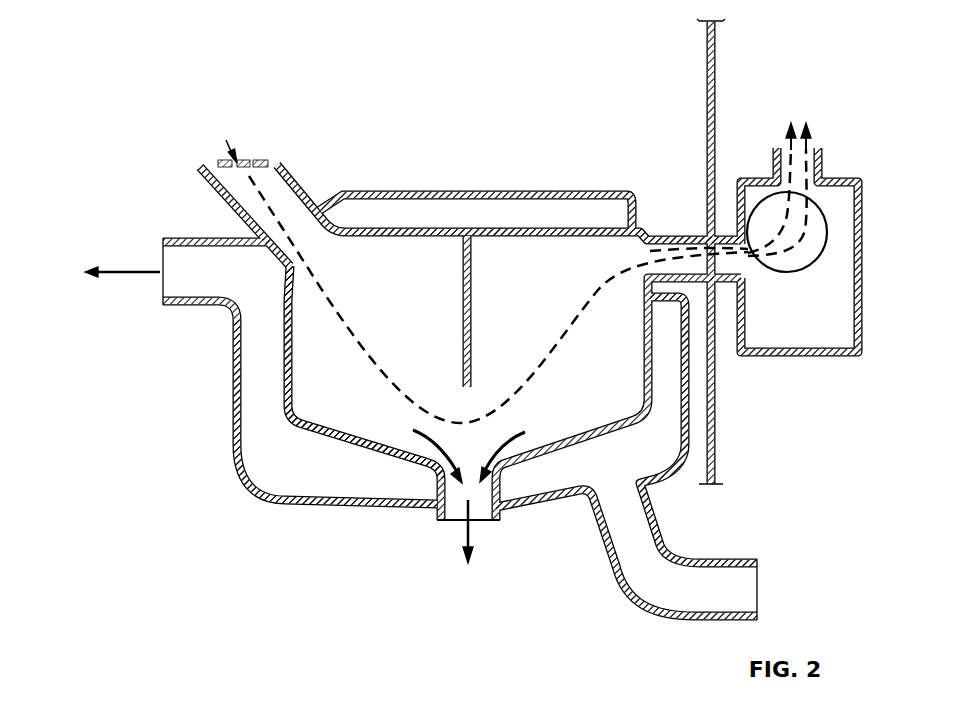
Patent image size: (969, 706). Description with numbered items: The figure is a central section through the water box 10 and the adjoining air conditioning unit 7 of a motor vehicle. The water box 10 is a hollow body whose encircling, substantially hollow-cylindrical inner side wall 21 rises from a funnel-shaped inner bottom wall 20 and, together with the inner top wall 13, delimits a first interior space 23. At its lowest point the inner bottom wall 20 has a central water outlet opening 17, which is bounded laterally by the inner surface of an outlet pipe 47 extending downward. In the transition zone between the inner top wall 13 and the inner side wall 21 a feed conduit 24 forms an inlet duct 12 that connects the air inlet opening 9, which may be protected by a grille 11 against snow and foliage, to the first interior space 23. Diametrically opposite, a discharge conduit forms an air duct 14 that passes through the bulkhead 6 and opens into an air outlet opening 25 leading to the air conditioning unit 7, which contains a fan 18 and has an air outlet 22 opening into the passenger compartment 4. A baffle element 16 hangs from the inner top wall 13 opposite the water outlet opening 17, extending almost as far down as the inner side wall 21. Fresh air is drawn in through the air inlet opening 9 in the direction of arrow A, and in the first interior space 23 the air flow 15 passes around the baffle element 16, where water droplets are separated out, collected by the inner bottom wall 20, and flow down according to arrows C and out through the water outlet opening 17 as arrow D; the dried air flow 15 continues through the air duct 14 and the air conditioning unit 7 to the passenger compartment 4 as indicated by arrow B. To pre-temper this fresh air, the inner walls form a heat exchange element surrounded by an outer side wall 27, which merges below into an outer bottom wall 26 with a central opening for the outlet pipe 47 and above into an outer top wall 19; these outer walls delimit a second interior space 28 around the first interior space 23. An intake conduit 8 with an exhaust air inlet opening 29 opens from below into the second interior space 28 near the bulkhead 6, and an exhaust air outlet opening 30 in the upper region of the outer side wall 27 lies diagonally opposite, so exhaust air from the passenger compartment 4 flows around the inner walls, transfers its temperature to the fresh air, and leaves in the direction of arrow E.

The passenger compartment 4 is at (786, 109).
The bulkhead 6 is at (720, 462).
The air conditioning unit 7 is at (794, 367).
The intake conduit 8 is at (618, 582).
The air inlet opening 9 is at (210, 157).
The water box 10 is at (412, 162).
The grille 11 is at (244, 162).
The inlet duct 12 is at (278, 202).
The inner top wall 13 is at (548, 230).
The air duct 14 is at (697, 268).
The air flow 15 is at (380, 368).
The baffle element 16 is at (470, 296).
The water outlet opening 17 is at (456, 506).
The fan 18 is at (781, 276).
The outer top wall 19 is at (592, 194).
The inner bottom wall 20 is at (412, 456).
The inner side wall 21 is at (287, 372).
The air outlet 22 is at (776, 152).
The first interior space 23 is at (307, 353).
The feed conduit 24 is at (233, 193).
The air outlet opening 25 is at (737, 268).
The outer bottom wall 26 is at (405, 505).
The outer side wall 27 is at (245, 440).
The second interior space 28 is at (658, 402).
The exhaust air inlet opening 29 is at (730, 596).
The exhaust air outlet opening 30 is at (203, 273).
The outlet pipe 47 is at (447, 453).
The arrow A is at (226, 140).
The arrow B is at (810, 130).
The arrows C is at (522, 438).
The arrow D is at (472, 535).
The arrow E is at (126, 272).